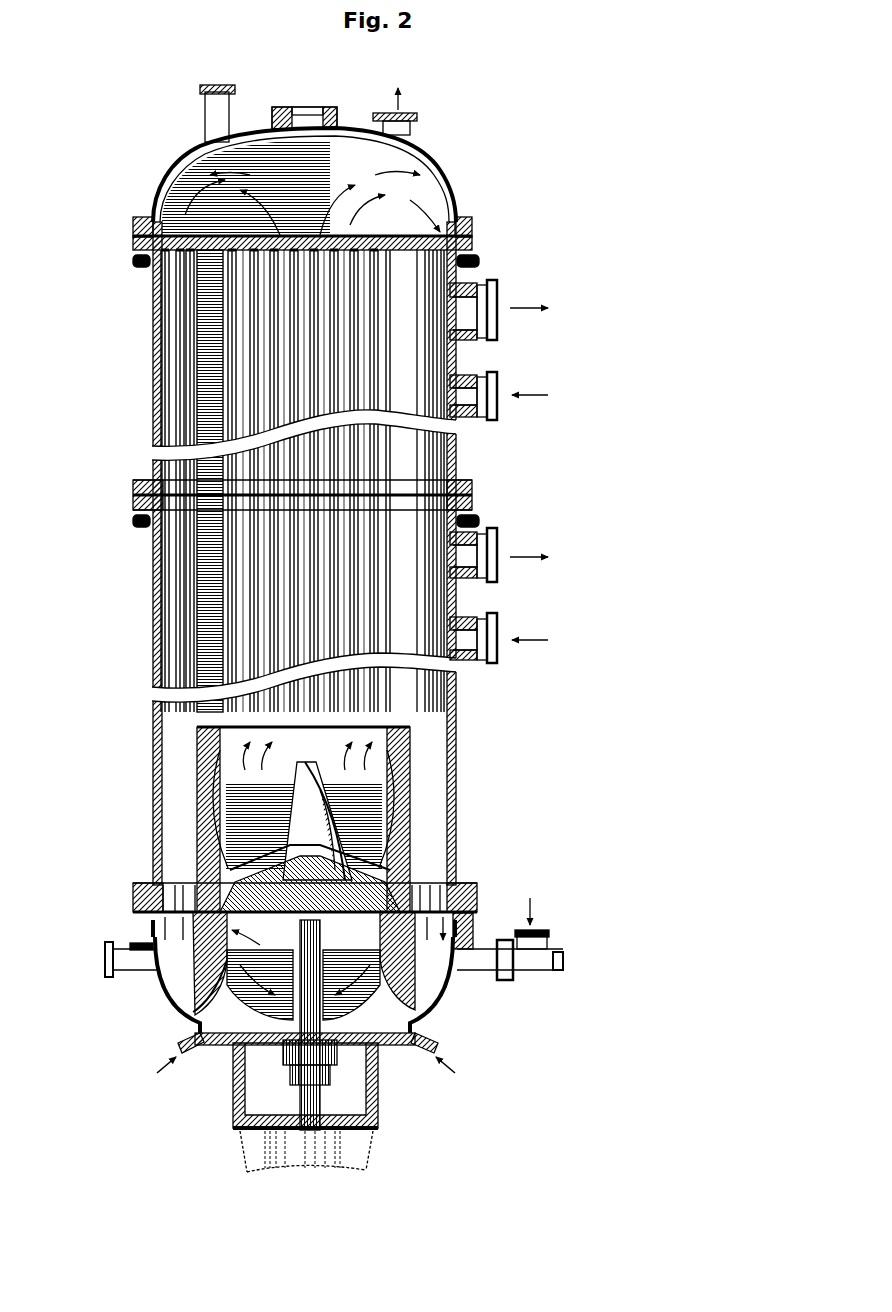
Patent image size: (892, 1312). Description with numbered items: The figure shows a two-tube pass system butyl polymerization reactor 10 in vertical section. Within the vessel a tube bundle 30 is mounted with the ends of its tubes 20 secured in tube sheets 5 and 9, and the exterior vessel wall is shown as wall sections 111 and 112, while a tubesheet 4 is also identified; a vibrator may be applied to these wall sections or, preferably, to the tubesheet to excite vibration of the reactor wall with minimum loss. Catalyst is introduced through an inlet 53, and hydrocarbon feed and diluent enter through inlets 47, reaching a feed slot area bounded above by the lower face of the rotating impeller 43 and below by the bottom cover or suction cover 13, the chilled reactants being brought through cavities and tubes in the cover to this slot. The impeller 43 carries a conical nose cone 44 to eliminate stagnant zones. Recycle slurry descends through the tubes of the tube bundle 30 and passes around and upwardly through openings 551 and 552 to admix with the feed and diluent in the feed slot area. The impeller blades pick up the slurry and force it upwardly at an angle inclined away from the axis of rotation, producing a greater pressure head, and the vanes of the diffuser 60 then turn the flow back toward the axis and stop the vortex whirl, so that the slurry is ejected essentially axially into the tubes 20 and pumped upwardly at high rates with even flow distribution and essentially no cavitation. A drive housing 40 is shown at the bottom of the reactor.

The tubesheet 4 is at (412, 237).
The tube sheet 9 is at (420, 121).
The tube bundle 30 is at (457, 268).
The reactor 10 is at (462, 354).
The exterior vessel wall 111 is at (460, 458).
The exterior vessel wall 112 is at (460, 608).
The tube sheet 5 is at (402, 686).
The tubes 20 is at (418, 720).
The diffuser 60 is at (410, 796).
The conical nose cone 44 is at (382, 824).
The impeller 43 is at (402, 888).
The suction cover 13 is at (447, 1003).
The opening 551 is at (173, 967).
The opening 552 is at (172, 1005).
The inlets 47 is at (175, 1040).
The inlet 53 is at (520, 973).
The drive housing 40 is at (382, 1102).